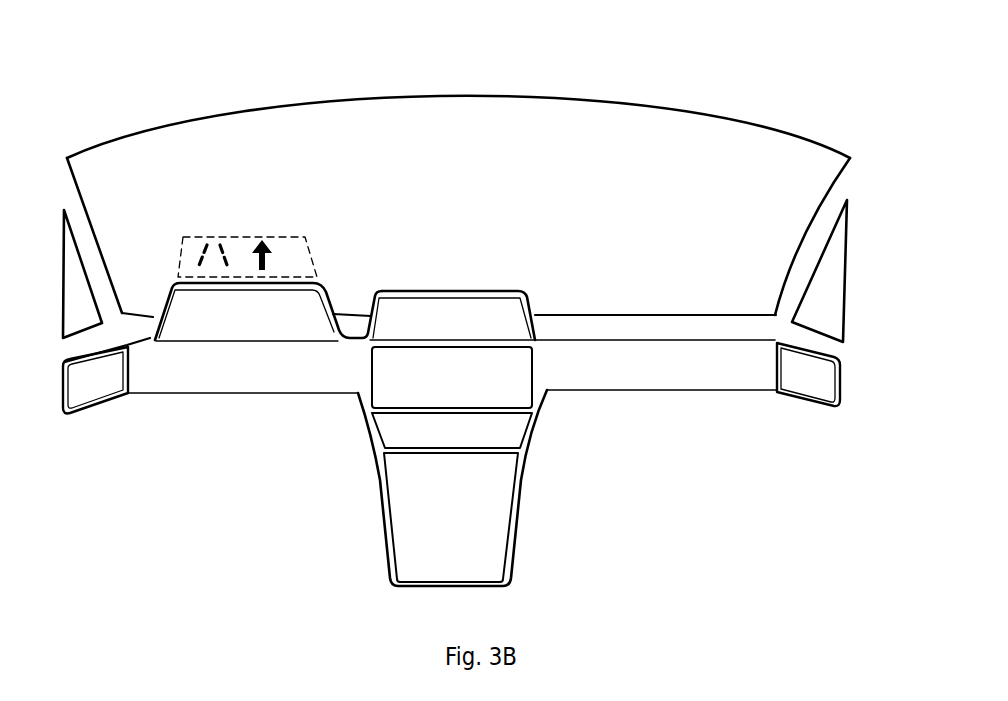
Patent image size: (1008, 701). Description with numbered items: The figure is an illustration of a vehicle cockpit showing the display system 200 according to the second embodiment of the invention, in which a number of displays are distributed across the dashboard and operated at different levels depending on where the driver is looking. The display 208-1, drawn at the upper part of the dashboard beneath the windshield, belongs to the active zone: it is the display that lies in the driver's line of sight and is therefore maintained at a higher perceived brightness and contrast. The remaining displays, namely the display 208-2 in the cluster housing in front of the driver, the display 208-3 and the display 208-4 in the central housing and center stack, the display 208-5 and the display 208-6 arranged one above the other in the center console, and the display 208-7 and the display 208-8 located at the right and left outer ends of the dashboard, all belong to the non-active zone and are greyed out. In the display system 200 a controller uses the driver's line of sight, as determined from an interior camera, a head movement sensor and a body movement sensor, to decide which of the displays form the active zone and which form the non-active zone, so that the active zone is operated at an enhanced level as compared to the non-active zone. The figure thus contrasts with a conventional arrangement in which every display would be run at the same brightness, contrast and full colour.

The display system 200 is at (682, 486).
The display 208-1 is at (310, 245).
The display 208-2 is at (330, 302).
The display 208-3 is at (530, 303).
The display 208-4 is at (543, 368).
The display 208-5 is at (537, 430).
The display 208-6 is at (517, 507).
The display 208-7 is at (832, 408).
The display 208-8 is at (110, 392).